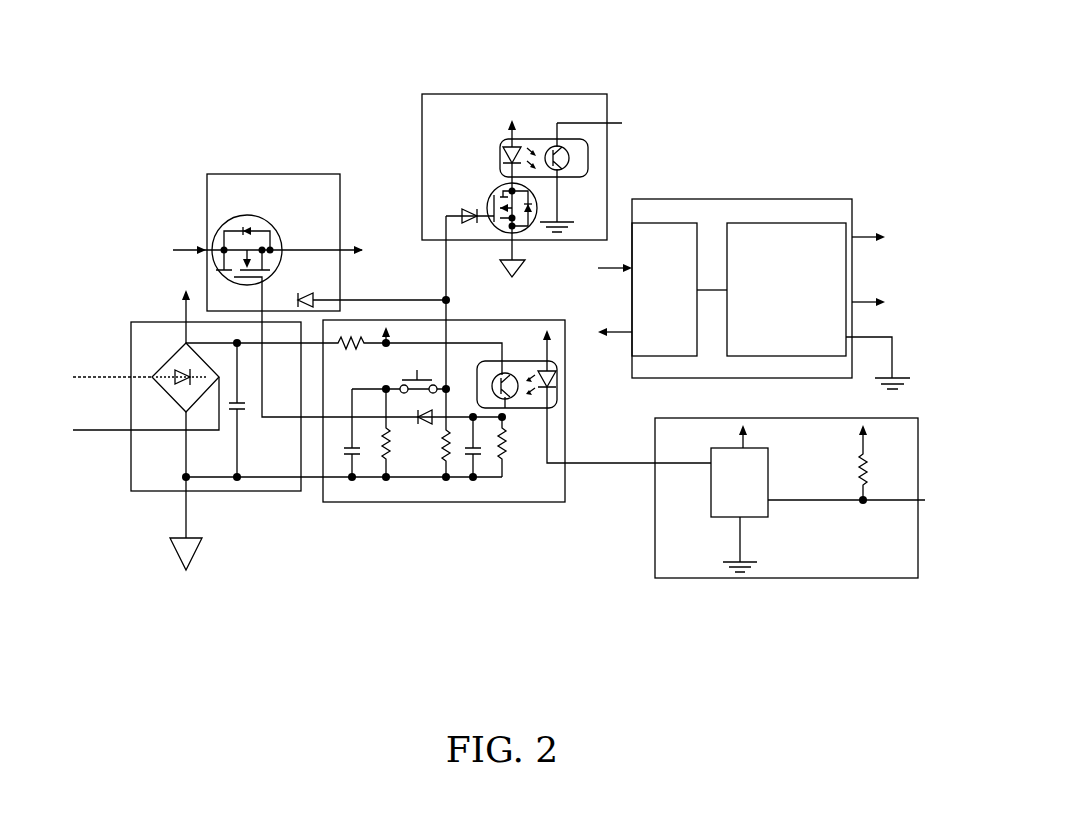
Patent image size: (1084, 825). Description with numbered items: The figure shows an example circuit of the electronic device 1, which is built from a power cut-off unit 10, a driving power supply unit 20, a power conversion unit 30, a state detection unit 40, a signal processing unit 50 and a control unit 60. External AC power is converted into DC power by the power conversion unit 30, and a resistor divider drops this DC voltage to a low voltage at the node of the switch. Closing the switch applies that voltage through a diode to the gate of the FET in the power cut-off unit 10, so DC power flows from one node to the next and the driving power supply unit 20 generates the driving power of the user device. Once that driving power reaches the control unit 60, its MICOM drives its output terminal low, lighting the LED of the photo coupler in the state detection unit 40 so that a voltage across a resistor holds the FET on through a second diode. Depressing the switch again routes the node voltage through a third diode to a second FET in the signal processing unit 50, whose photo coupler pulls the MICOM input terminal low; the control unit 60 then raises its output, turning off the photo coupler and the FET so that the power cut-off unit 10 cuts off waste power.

The electronic device 1 is at (928, 42).
The power cut-off unit 10 is at (270, 174).
The driving power supply unit 20 is at (738, 198).
The power conversion unit 30 is at (131, 477).
The state detection unit 40 is at (442, 504).
The signal processing unit 50 is at (512, 93).
The control unit 60 is at (786, 580).